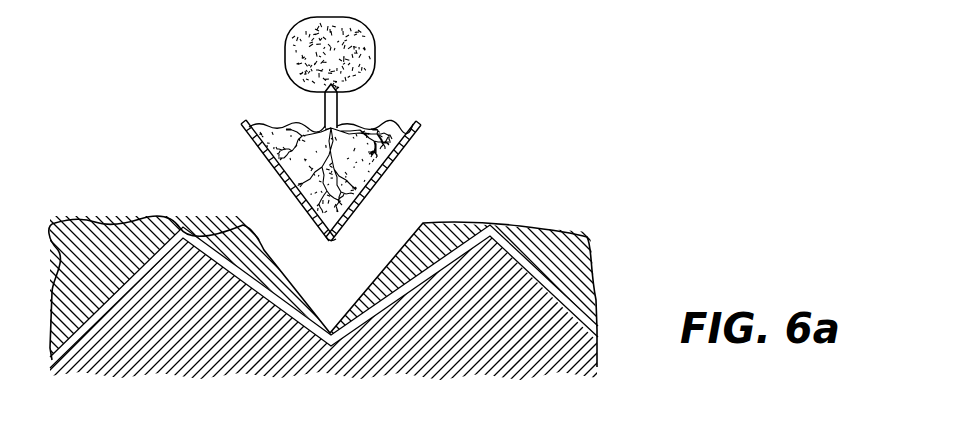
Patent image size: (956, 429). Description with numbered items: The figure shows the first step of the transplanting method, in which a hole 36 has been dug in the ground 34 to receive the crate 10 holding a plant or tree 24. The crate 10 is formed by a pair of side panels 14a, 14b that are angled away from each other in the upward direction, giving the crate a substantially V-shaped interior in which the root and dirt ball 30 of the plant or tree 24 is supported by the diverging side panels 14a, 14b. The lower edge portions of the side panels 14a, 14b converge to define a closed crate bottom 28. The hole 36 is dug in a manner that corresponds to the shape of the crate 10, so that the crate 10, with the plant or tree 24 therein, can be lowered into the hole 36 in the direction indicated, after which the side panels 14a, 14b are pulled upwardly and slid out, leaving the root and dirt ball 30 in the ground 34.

The crate apparatus 10 is at (188, 70).
The plant or tree 24 is at (374, 42).
The root and dirt ball 30 is at (376, 125).
The side panel 14a is at (262, 157).
The side panel 14b is at (410, 153).
The crate bottom 28 is at (343, 243).
The ground 34 is at (502, 225).
The hole 36 is at (329, 284).